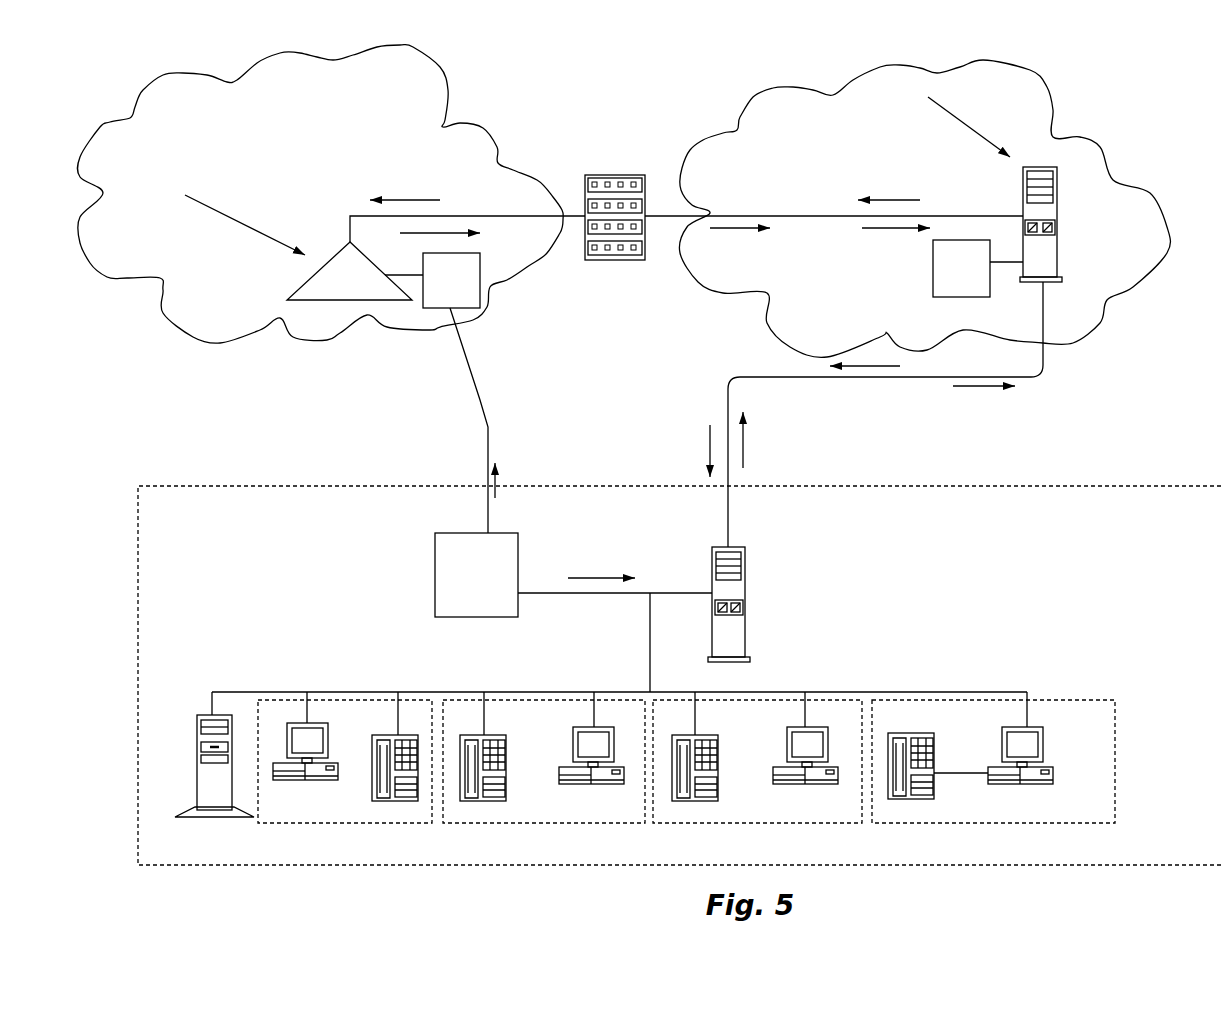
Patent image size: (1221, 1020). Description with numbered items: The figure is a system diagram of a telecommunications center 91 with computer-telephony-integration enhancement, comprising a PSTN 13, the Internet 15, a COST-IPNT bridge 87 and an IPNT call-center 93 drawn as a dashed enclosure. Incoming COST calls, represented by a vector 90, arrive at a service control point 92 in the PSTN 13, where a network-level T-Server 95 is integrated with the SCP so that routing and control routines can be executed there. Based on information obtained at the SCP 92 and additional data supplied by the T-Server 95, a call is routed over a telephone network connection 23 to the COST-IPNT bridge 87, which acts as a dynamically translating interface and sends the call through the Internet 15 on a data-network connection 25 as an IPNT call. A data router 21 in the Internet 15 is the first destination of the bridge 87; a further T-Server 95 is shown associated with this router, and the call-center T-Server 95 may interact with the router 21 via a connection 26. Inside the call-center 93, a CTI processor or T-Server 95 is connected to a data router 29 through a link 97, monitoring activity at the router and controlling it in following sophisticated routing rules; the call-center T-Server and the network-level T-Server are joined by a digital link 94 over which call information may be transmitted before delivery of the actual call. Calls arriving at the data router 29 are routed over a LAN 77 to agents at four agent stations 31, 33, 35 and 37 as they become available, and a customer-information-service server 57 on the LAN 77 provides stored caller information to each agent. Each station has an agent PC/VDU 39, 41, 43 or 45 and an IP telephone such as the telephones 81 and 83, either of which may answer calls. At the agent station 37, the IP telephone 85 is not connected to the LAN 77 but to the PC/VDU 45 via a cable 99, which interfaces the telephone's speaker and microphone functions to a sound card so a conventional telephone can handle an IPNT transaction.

The PSTN 13 is at (100, 127).
The Internet 15 is at (1113, 185).
The data router 21 is at (1022, 207).
The telephone network connection 23 is at (460, 213).
The data-network connection 25 is at (850, 215).
The connection 26 is at (883, 380).
The data router 29 is at (745, 603).
The agent station 31 is at (378, 823).
The agent station 33 is at (573, 825).
The agent station 35 is at (783, 825).
The agent station 37 is at (1035, 825).
The agent's PC/VDU 39 is at (333, 781).
The agent's PC/VDU 41 is at (568, 785).
The agent's PC/VDU 43 is at (783, 785).
The agent's PC/VDU 45 is at (1030, 785).
The customer-information-service (CIS) server 57 is at (196, 748).
The LAN 77 is at (867, 690).
The IP-telephone 81 is at (506, 758).
The IP telephone 83 is at (718, 765).
The IP telephone 85 is at (935, 757).
The COST-IPNT bridge 87 is at (617, 262).
The vector 90 is at (232, 218).
The telecommunications center 91 is at (586, 112).
The service control point (SCP) 92 is at (320, 270).
The IPNT call-center 93 is at (1072, 478).
The digital link 94 is at (482, 402).
The CTI processor (T-Server) 95 is at (480, 277).
The server link 97 is at (623, 594).
The cable 99 is at (955, 774).